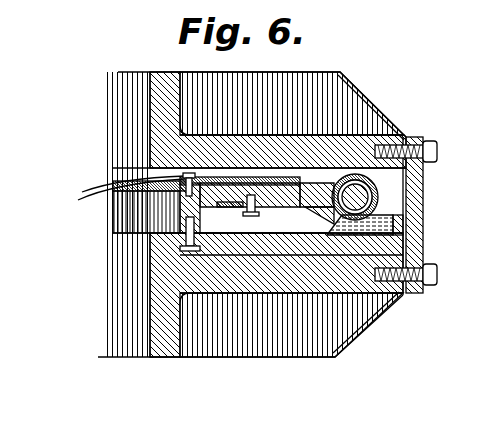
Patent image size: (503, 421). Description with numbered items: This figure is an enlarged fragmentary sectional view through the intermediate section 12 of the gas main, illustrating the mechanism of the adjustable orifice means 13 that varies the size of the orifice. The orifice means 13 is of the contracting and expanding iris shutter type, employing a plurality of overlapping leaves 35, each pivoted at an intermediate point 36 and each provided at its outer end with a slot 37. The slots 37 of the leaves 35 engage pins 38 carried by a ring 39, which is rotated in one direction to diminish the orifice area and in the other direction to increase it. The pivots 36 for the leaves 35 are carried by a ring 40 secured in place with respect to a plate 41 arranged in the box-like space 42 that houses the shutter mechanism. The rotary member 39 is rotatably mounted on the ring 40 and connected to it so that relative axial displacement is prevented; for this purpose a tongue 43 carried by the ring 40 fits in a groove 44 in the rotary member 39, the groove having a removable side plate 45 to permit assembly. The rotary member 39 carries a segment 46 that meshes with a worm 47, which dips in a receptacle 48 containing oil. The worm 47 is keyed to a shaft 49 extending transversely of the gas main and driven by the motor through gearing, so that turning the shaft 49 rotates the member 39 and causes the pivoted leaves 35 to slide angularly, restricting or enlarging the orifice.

The intermediate section 12 is at (345, 290).
The adjustable orifice means 13 is at (97, 182).
The overlapping leaves 35 is at (107, 195).
The intermediate pivot point 36 is at (148, 152).
The slot 37 is at (248, 178).
The pins 38 is at (300, 140).
The ring (rotary member) 39 is at (316, 175).
The ring 40 is at (180, 204).
The plate 41 is at (378, 294).
The box-like space 42 is at (392, 178).
The tongue 43 is at (226, 178).
The groove 44 is at (236, 178).
The removable side plate 45 is at (233, 213).
The segment 46 is at (263, 226).
The worm 47 is at (390, 204).
The receptacle 48 is at (348, 235).
The shaft 49 is at (400, 252).